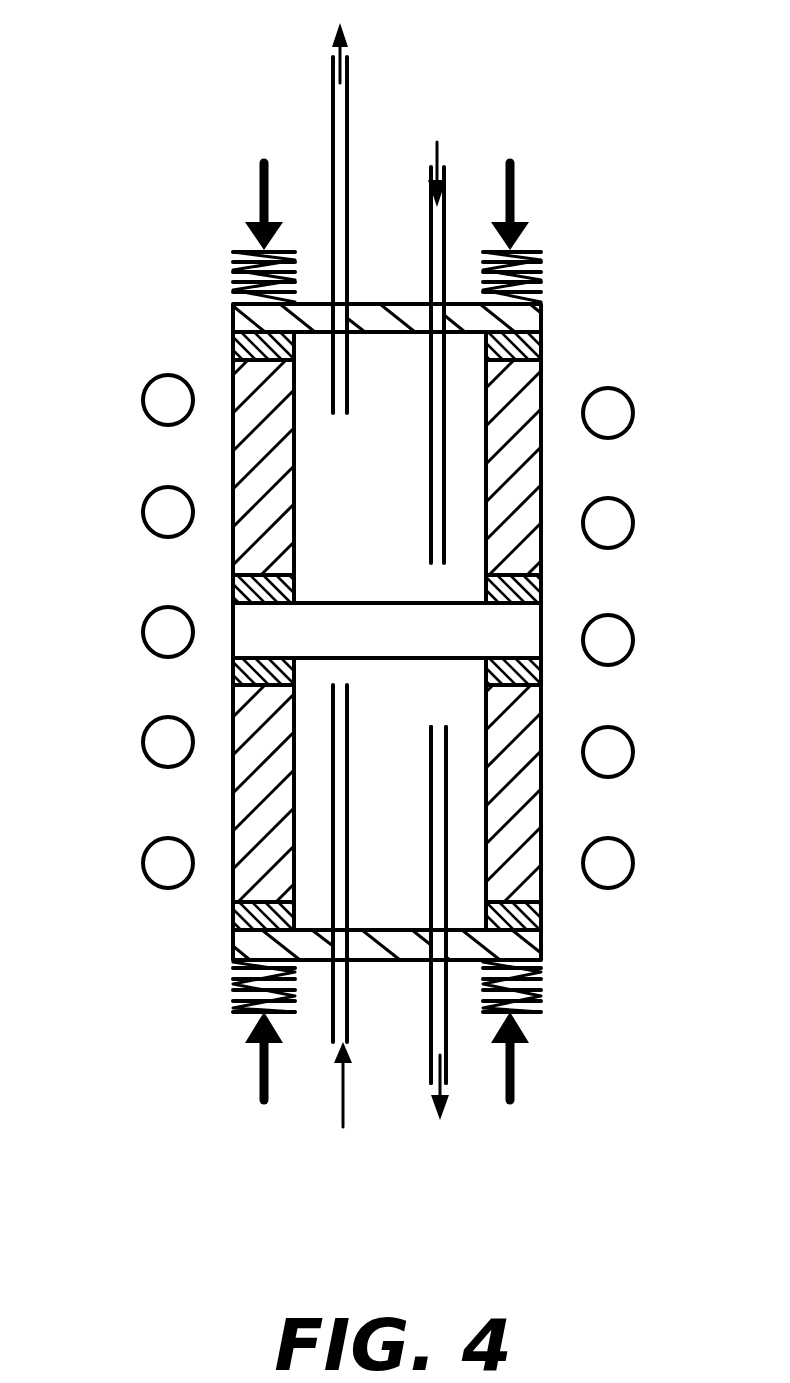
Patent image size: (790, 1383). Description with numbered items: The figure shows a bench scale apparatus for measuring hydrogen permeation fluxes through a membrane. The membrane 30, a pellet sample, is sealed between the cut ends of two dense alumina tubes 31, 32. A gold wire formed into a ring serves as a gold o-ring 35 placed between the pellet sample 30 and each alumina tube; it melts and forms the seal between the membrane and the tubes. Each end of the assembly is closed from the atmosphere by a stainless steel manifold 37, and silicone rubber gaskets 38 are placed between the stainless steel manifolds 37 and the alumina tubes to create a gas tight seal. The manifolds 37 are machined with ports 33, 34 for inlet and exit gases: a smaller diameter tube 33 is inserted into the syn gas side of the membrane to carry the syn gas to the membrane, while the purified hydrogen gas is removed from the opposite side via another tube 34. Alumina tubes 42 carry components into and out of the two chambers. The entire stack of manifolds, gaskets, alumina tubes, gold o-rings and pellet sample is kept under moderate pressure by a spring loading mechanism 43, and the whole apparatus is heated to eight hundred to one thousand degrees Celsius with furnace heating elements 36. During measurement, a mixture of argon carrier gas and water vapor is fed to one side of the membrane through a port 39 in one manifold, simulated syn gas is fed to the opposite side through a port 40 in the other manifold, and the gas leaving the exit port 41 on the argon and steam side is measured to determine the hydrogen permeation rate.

The membrane 30 is at (233, 637).
The alumina tube 31 is at (233, 820).
The alumina tube 32 is at (233, 465).
The smaller diameter tube 33 is at (427, 262).
The tube 34 is at (422, 987).
The gold o-ring 35 is at (233, 590).
The furnace heating elements 36 is at (624, 542).
The stainless steel manifold 37 is at (383, 332).
The silicone rubber gasket 38 is at (541, 343).
The port 39 is at (322, 1093).
The port 40 is at (440, 162).
The exit port 41 is at (447, 1103).
The alumina tubes 42 is at (447, 838).
The spring loading mechanism 43 is at (530, 990).